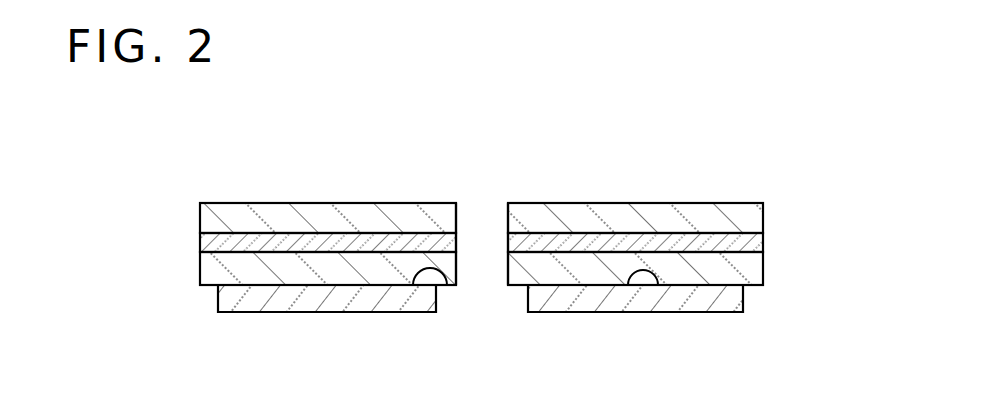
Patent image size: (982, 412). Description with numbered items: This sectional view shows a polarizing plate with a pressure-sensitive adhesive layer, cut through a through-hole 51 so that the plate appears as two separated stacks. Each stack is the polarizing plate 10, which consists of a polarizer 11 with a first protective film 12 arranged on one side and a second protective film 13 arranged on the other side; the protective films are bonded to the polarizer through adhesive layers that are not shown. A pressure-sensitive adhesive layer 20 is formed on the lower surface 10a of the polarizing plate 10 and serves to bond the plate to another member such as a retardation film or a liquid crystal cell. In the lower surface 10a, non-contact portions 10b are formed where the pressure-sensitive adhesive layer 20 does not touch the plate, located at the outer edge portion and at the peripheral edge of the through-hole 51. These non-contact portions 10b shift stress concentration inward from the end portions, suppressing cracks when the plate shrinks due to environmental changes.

The polarizing plate 10 is at (500, 245).
The lower surface 10a is at (448, 283).
The non-contact portion 10b is at (207, 287).
The polarizer 11 is at (203, 248).
The first protective film 12 is at (203, 220).
The second protective film 13 is at (203, 268).
The pressure-sensitive adhesive layer 20 is at (228, 312).
The through-hole 51 is at (507, 219).